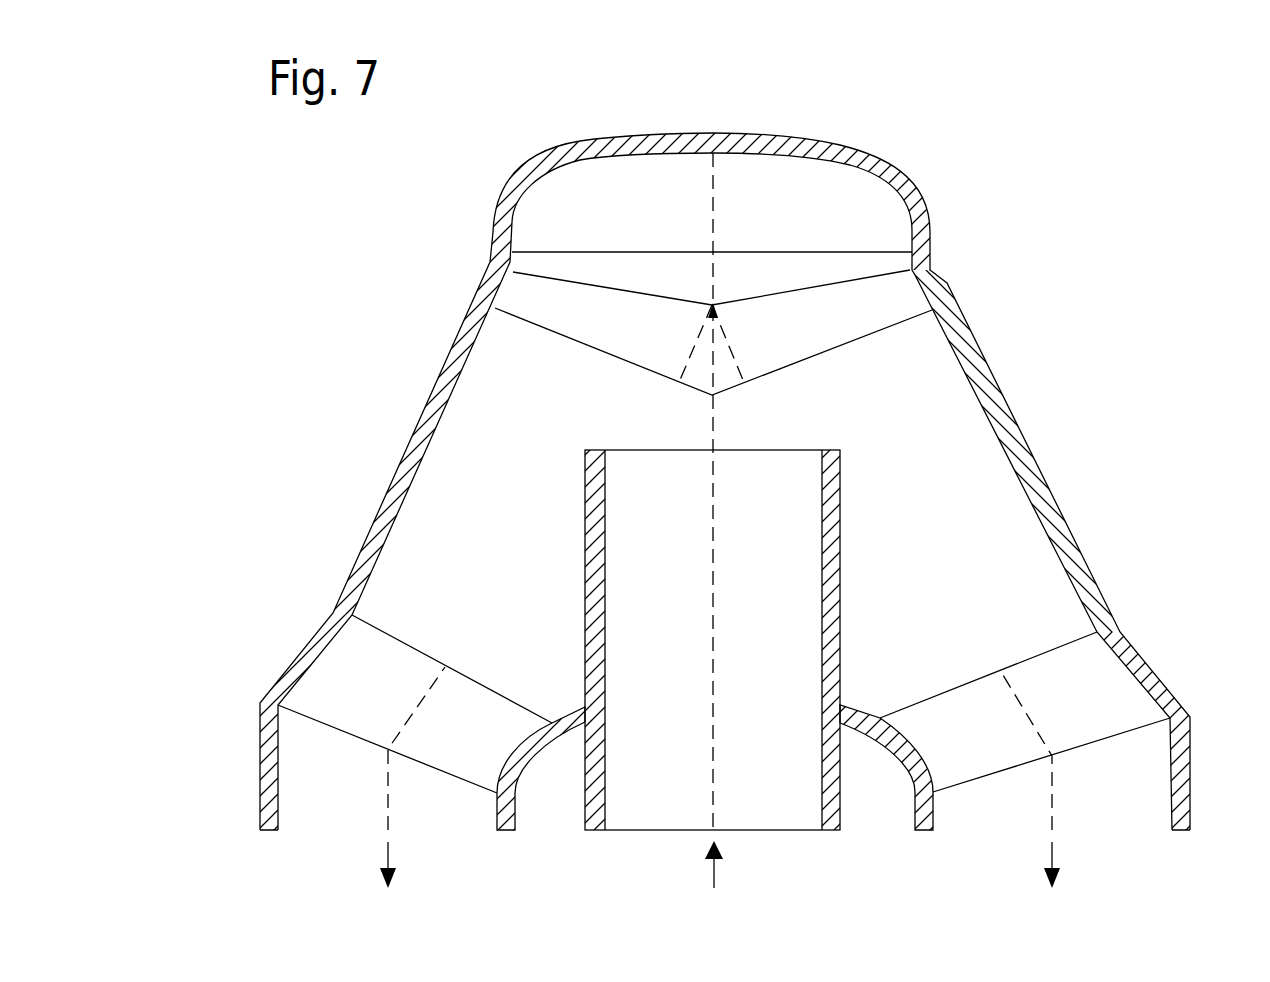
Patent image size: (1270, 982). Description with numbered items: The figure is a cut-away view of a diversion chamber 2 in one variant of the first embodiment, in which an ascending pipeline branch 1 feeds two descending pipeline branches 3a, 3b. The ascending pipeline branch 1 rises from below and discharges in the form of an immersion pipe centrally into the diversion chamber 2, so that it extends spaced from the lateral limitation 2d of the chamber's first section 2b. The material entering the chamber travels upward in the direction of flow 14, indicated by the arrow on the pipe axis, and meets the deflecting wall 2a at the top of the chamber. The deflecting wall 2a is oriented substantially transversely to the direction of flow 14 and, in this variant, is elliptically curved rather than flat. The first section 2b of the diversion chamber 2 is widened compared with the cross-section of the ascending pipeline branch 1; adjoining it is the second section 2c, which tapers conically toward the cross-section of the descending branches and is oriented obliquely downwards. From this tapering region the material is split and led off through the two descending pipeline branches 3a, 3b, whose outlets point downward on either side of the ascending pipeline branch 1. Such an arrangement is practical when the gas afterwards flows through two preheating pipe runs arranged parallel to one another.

The ascending pipeline branch 1 is at (785, 540).
The diversion chamber 2 is at (718, 510).
The deflecting wall 2a is at (770, 155).
The first section 2b is at (475, 318).
The second section 2c is at (463, 474).
The lateral limitation 2d is at (883, 383).
The descending pipeline branch 3a is at (327, 798).
The descending pipeline branch 3b is at (1115, 798).
The direction of flow 14 is at (714, 877).